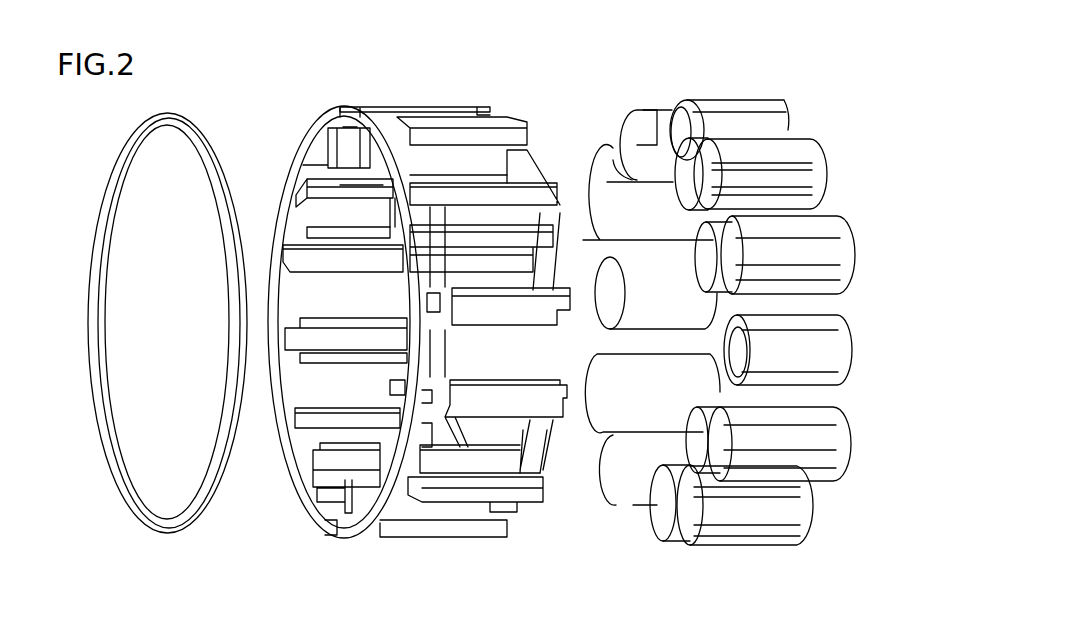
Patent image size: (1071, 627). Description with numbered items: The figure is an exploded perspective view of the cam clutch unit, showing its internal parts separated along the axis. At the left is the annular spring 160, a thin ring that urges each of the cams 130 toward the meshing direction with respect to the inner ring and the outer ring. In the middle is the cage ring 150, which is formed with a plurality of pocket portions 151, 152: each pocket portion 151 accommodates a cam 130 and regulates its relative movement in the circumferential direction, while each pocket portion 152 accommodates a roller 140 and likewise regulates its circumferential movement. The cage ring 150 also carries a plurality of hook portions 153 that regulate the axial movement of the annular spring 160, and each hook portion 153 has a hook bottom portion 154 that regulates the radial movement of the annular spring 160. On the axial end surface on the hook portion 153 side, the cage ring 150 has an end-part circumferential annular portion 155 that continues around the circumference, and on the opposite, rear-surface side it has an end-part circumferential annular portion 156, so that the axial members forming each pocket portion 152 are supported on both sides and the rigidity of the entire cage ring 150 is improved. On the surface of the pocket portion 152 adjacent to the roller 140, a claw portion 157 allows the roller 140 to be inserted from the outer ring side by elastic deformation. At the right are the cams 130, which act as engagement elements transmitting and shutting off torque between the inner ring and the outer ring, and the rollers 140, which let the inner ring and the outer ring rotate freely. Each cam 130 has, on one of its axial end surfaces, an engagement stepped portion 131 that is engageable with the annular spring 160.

The cam 130 is at (792, 250).
The engagement stepped portion 131 is at (695, 170).
The roller 140 is at (723, 110).
The cage ring 150 is at (280, 123).
The pocket portion 151 is at (553, 315).
The pocket portion 152 is at (560, 377).
The hook portion 153 is at (440, 198).
The hook bottom portion 154 is at (427, 205).
The end-part circumferential annular portion 155 is at (290, 473).
The end-part circumferential annular portion 156 is at (547, 452).
The claw portion 157 is at (450, 102).
The annular spring 160 is at (120, 163).